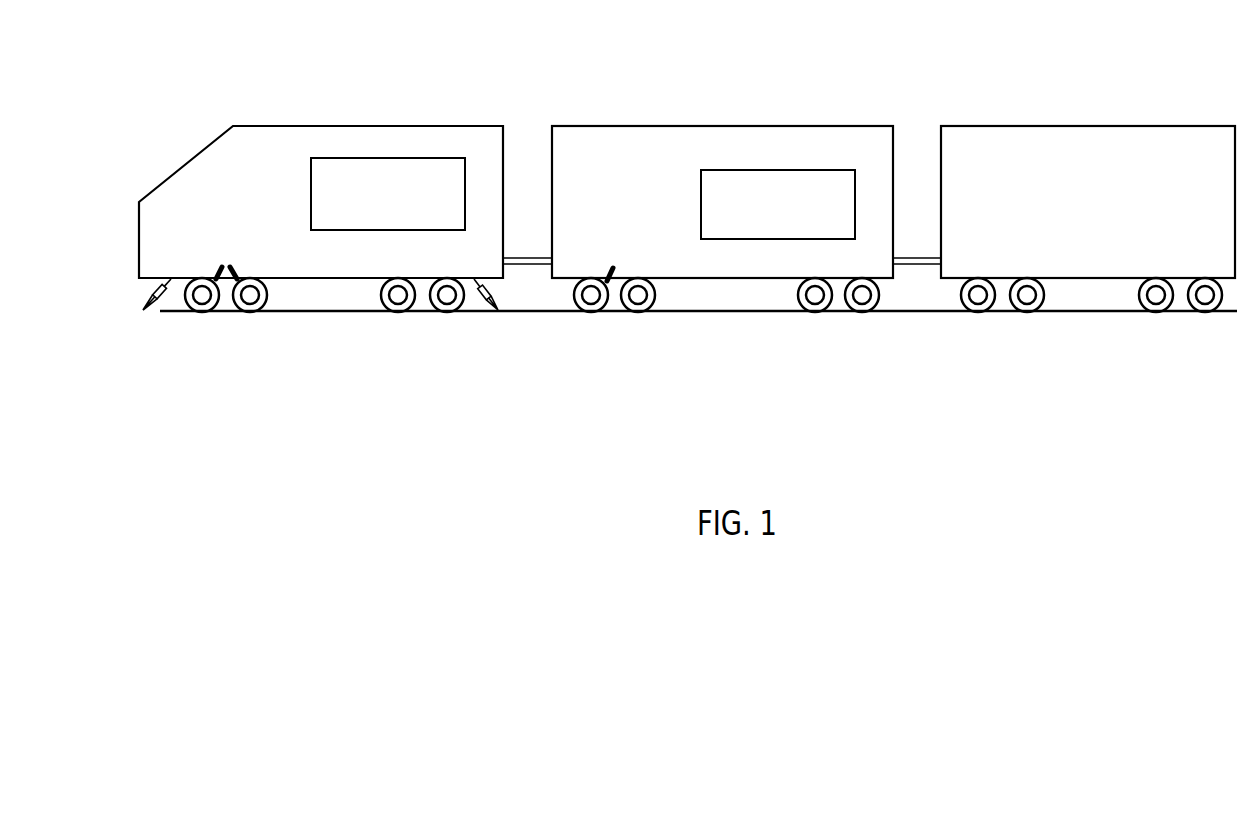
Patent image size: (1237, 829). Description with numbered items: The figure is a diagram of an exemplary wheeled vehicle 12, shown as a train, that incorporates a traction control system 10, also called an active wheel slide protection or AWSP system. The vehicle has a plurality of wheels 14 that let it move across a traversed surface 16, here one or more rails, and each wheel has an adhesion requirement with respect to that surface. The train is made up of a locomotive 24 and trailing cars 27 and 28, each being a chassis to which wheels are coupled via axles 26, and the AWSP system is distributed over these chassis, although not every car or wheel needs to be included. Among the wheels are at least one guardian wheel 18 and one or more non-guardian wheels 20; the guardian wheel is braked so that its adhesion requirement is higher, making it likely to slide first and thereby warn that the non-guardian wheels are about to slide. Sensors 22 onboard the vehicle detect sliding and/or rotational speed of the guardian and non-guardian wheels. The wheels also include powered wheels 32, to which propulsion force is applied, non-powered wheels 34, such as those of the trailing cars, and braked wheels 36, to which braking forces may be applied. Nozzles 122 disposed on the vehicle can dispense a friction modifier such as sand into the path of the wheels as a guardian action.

The traction control system 10 is at (1124, 74).
The wheeled vehicle 12 is at (216, 141).
The wheels 14 is at (822, 370).
The surface 16 is at (356, 311).
The guardian wheel 18 is at (192, 309).
The non-guardian wheels 20 is at (432, 302).
The sensors 22 is at (222, 265).
The chassis 24 is at (268, 192).
The axles 26 is at (226, 309).
The car 27 is at (673, 207).
The car 28 is at (1100, 214).
The powered wheels 32 is at (332, 352).
The non-powered wheels 34 is at (726, 319).
The braked wheels 36 is at (584, 310).
The nozzles 122 is at (150, 295).